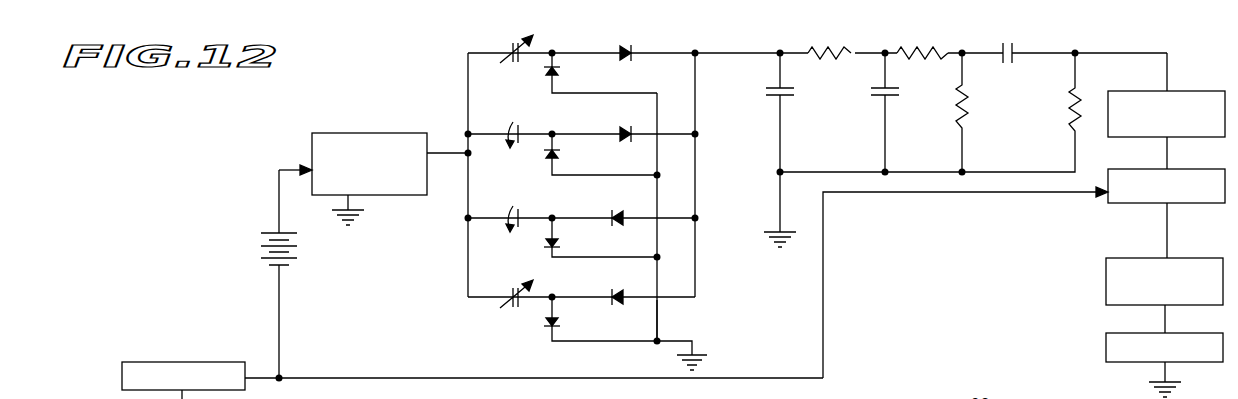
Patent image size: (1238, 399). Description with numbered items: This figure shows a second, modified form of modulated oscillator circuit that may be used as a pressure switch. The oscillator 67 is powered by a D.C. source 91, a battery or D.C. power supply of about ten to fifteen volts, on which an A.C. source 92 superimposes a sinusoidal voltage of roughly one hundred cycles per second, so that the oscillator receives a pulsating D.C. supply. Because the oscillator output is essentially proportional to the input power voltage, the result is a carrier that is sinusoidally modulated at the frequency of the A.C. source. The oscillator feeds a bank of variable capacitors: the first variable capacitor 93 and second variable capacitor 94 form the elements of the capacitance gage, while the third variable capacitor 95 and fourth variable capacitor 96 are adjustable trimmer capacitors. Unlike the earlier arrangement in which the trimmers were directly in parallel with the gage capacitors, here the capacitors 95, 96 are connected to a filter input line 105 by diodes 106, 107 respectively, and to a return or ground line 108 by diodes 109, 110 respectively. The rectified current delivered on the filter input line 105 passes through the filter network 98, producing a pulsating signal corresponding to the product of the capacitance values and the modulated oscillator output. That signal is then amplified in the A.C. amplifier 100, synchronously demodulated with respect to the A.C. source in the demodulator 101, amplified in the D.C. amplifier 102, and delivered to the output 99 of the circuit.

The oscillator 67 is at (345, 133).
The D.C. source 91 is at (272, 230).
The A.C. source 92 is at (215, 362).
The first variable capacitor 93 is at (510, 125).
The second variable capacitor 94 is at (510, 208).
The third variable capacitor 95 is at (512, 43).
The fourth variable capacitor 96 is at (512, 293).
The filter network 98 is at (763, 42).
The output 99 is at (1106, 348).
The A.C. amplifier 100 is at (1195, 91).
The demodulator 101 is at (1212, 169).
The D.C. amplifier 102 is at (1106, 290).
The filter input line 105 is at (722, 53).
The diode 106 is at (625, 43).
The diode 107 is at (632, 290).
The return or ground line 108 is at (657, 328).
The diode 109 is at (560, 72).
The diode 110 is at (560, 325).